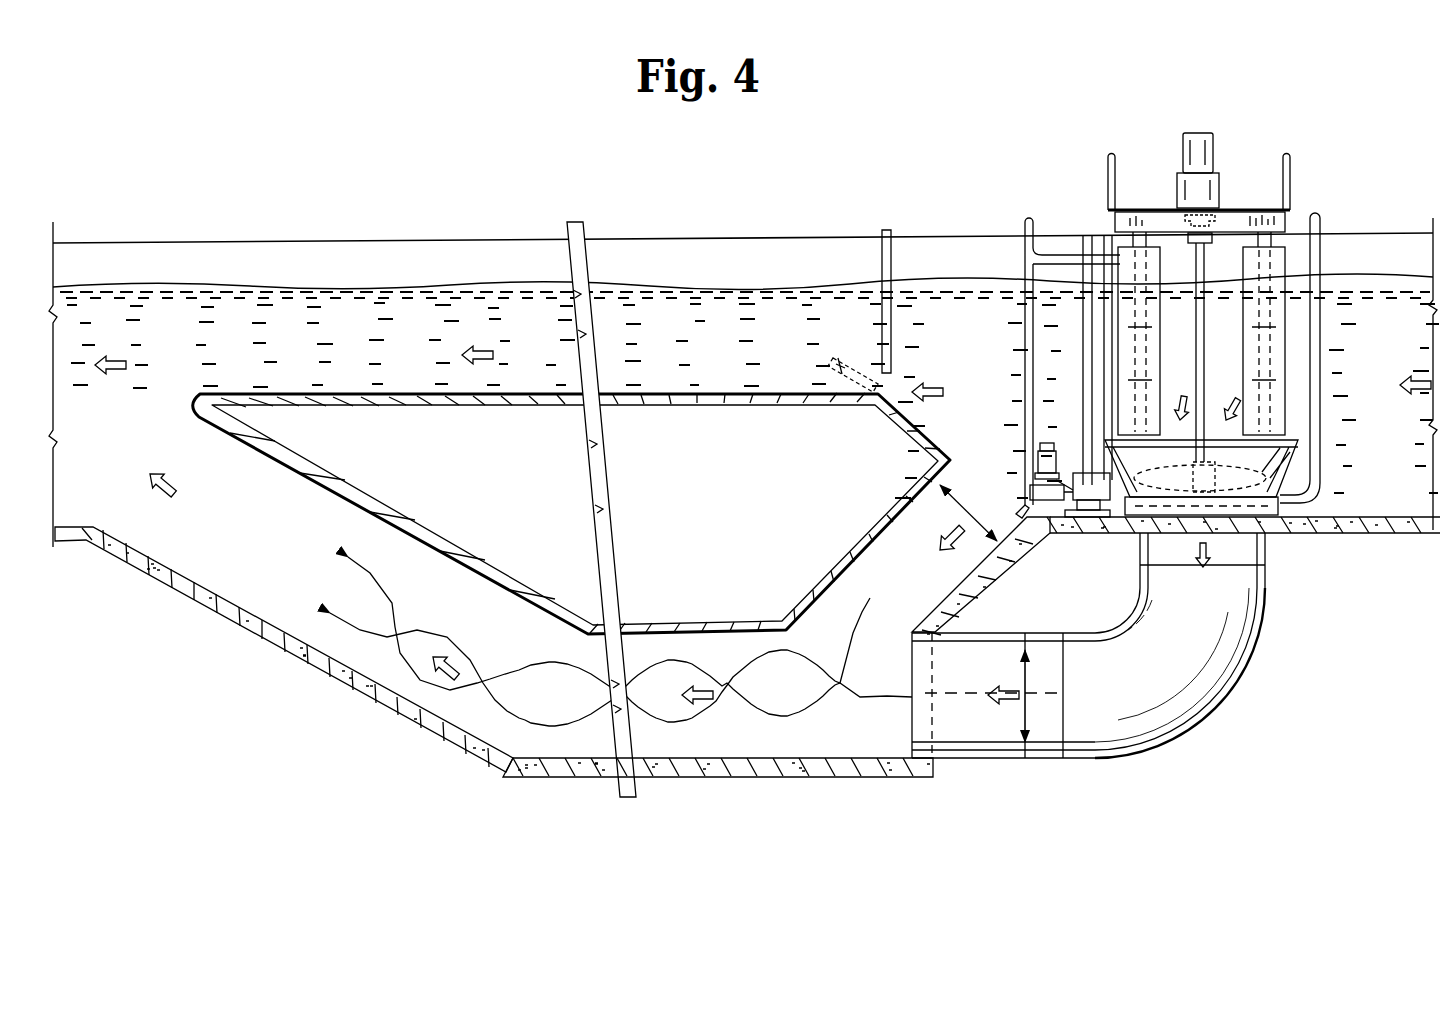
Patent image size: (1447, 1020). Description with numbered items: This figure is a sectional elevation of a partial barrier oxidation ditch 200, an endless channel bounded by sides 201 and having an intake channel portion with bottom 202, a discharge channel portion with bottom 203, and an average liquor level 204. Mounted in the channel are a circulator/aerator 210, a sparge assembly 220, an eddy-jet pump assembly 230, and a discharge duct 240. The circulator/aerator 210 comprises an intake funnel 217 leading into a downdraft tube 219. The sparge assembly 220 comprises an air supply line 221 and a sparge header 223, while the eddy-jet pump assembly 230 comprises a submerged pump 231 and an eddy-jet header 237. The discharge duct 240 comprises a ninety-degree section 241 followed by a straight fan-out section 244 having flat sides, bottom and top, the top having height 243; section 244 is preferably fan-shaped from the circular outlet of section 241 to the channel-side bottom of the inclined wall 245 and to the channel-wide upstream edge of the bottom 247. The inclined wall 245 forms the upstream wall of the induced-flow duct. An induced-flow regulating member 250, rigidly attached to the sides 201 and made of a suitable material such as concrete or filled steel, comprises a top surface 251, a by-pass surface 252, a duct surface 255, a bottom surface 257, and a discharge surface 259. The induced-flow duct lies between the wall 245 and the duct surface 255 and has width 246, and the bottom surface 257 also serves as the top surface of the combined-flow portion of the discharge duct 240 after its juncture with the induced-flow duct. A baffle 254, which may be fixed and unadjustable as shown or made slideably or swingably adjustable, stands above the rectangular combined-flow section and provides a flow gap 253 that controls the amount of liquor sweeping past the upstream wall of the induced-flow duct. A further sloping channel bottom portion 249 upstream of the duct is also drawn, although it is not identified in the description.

The partial barrier oxidation ditch 200 is at (512, 224).
The sides 201 is at (1403, 235).
The bottom of intake channel portion 202 is at (1412, 517).
The bottom of discharge channel portion 203 is at (72, 526).
The average liquor level 204 is at (1363, 276).
The circulator/aerator 210 is at (1220, 127).
The intake funnel 217 is at (1300, 450).
The downdraft tube 219 is at (1140, 550).
The sparge assembly 220 is at (1318, 210).
The air supply line 221 is at (1320, 322).
The sparge header 223 is at (1275, 517).
The eddy-jet pump assembly 230 is at (1068, 443).
The submerged pump 231 is at (1038, 458).
The eddy-jet header 237 is at (1019, 508).
The discharge duct 240 is at (1111, 666).
The 90° section 241 is at (1250, 648).
The height 243 is at (1022, 642).
The straight fan-out section 244 is at (978, 762).
The inclined wall 245 is at (957, 596).
The width 246 is at (955, 505).
The bottom 247 is at (840, 757).
The inclined upstream bottom 249 is at (218, 590).
The induced-flow regulating member 250 is at (571, 503).
The top surface 251 is at (667, 405).
The by-pass surface 252 is at (915, 433).
The flow gap 253 is at (835, 363).
The baffle 254 is at (893, 247).
The duct surface 255 is at (846, 566).
The bottom surface 257 is at (703, 623).
The discharge surface 259 is at (738, 284).